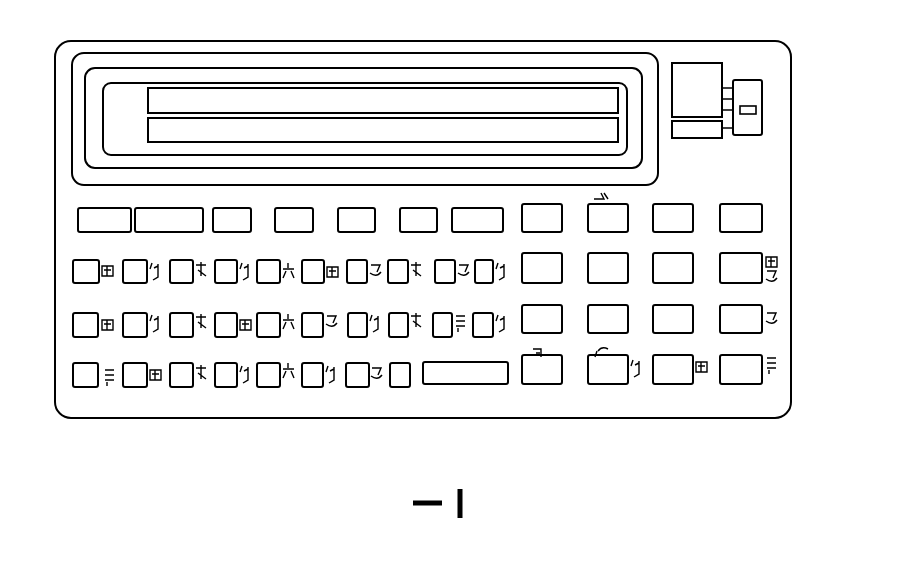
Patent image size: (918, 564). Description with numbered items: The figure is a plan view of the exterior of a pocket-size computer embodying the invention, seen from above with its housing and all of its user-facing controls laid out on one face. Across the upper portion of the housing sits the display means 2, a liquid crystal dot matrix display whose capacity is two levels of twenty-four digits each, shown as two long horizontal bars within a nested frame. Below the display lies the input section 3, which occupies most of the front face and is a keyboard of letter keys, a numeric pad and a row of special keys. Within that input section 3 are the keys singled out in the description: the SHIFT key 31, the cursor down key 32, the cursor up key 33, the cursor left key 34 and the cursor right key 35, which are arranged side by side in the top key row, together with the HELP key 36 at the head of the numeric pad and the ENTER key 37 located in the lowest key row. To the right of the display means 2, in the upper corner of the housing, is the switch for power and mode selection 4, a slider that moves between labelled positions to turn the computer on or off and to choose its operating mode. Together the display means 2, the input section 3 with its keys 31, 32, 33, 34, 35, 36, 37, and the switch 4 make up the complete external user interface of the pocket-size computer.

The display means 2 is at (517, 95).
The input section 3 is at (72, 303).
The switch for power and mode selection 4 is at (747, 85).
The SHIFT key 31 is at (173, 207).
The cursor down key 32 is at (240, 207).
The cursor up key 33 is at (303, 207).
The cursor left key 34 is at (372, 207).
The cursor right key 35 is at (438, 207).
The HELP key 36 is at (565, 207).
The ENTER key 37 is at (500, 382).